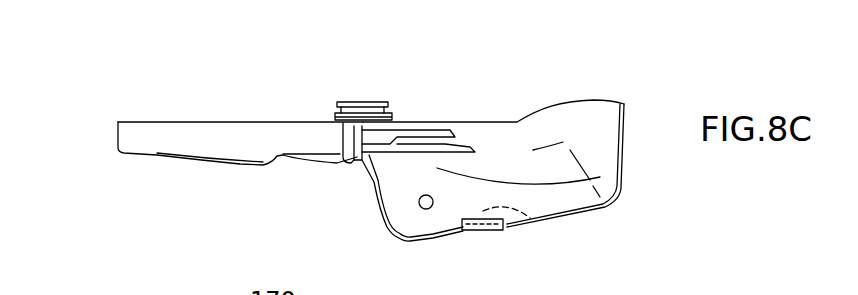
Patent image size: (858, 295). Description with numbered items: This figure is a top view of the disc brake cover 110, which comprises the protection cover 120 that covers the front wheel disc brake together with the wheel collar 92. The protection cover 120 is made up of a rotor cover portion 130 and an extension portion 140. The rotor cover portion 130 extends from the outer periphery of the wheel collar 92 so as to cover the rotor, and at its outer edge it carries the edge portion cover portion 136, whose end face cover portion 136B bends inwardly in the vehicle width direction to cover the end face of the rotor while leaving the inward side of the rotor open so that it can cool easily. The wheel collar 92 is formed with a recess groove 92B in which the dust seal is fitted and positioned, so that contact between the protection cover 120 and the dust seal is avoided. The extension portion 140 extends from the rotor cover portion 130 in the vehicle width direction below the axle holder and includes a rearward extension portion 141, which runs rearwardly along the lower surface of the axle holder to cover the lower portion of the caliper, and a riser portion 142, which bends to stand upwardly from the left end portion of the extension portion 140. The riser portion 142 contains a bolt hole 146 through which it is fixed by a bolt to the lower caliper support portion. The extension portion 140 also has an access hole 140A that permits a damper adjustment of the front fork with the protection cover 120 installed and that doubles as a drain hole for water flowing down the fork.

The disc brake cover 110 is at (570, 81).
The protection cover 120 is at (287, 147).
The rotor cover portion 130 is at (235, 122).
The edge portion cover portion 136 is at (153, 175).
The end face cover portion 136B is at (203, 138).
The extension portion 140 is at (380, 193).
The access hole 140A is at (423, 209).
The rearward extension portion 141 is at (593, 213).
The riser portion 142 is at (465, 238).
The bolt hole 146 is at (540, 227).
The wheel collar 92 is at (353, 102).
The recess groove 92B is at (390, 110).